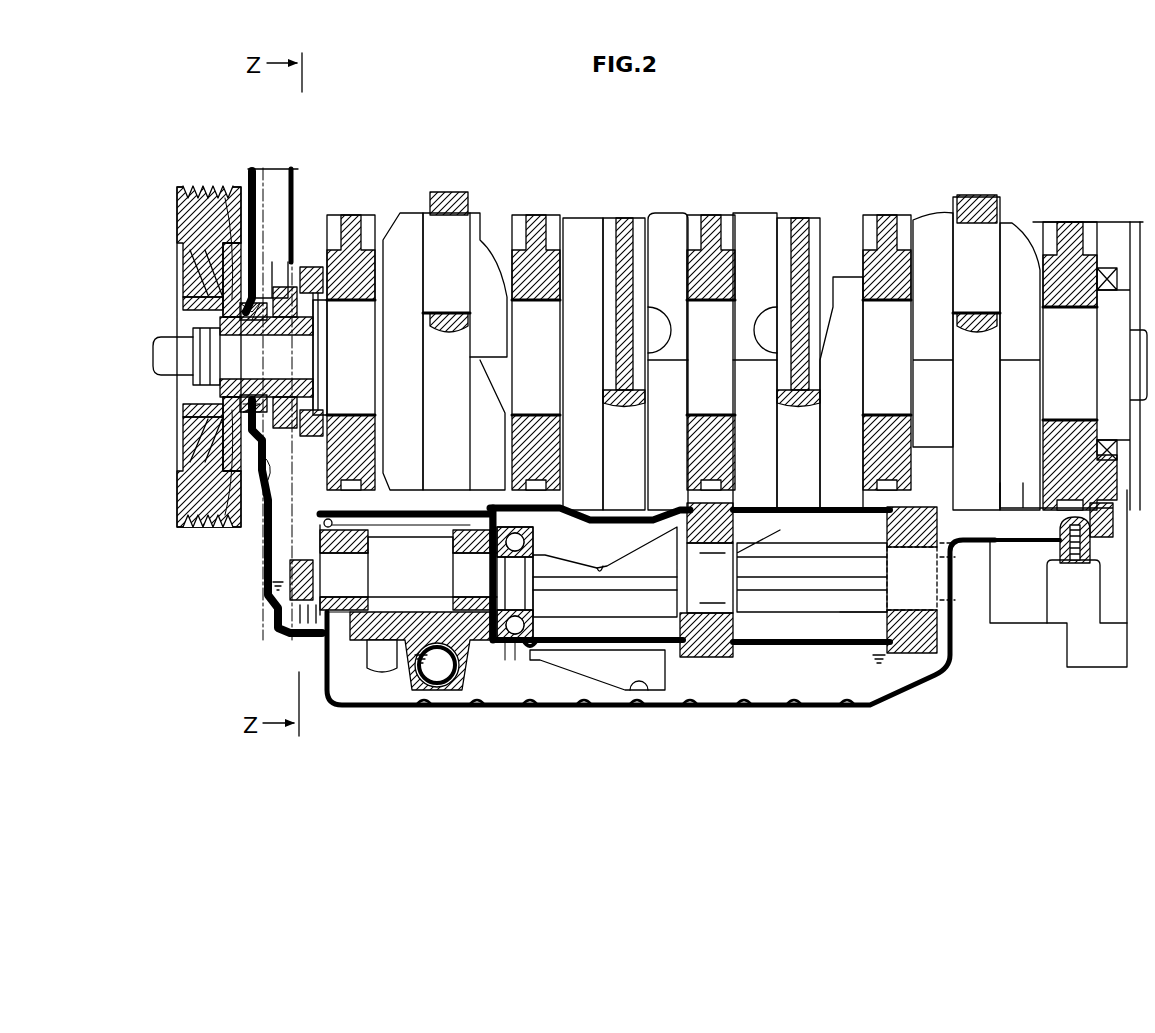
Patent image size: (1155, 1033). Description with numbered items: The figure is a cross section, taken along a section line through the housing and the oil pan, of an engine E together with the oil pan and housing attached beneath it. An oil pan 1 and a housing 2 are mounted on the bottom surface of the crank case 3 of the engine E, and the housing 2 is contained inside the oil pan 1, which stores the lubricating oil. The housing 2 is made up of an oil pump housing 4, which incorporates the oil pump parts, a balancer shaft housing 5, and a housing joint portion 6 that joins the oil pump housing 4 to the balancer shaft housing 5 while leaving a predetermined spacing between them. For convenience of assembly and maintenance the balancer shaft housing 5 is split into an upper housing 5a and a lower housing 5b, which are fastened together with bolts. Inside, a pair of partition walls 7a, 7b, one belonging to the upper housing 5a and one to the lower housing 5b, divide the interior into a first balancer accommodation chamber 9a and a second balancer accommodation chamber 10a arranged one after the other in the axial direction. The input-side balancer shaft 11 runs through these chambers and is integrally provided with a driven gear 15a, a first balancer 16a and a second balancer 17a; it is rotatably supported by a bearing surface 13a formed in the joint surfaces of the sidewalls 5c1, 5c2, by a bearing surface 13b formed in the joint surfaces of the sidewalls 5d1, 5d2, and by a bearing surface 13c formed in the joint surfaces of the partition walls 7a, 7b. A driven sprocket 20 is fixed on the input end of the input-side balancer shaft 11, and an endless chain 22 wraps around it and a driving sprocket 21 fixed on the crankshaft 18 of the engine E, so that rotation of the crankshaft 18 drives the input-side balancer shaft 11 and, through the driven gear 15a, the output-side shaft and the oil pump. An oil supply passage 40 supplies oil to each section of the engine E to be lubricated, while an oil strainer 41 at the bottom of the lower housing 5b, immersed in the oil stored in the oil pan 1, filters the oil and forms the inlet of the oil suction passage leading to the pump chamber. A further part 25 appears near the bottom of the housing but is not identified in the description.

The oil pan 1 is at (945, 690).
The housing 2 is at (940, 665).
The crank case 3 is at (245, 477).
The oil pump housing 4 is at (438, 510).
The balancer shaft housing 5 is at (1080, 683).
The upper housing 5a is at (947, 527).
The lower housing 5b is at (957, 643).
The sidewall 5c1 is at (480, 510).
The sidewall 5c2 is at (470, 690).
The sidewall 5d1 is at (925, 505).
The sidewall 5d2 is at (907, 647).
The housing joint portion 6 is at (449, 690).
The partition wall 7a is at (730, 485).
The partition wall 7b is at (710, 640).
The first balancer accommodation chamber 9a is at (625, 625).
The second balancer accommodation chamber 10a is at (870, 627).
The input-side balancer shaft 11 is at (473, 567).
The bearing surface 13a is at (470, 617).
The bearing surface 13b is at (907, 607).
The bearing surface 13c is at (735, 640).
The driven gear 15a is at (513, 660).
The first balancer 16a is at (567, 600).
The second balancer 17a is at (817, 610).
The crankshaft 18 is at (300, 345).
The driven sprocket 20 is at (295, 600).
The driving sprocket 21 is at (265, 270).
The endless chain 22 is at (300, 498).
The oil pipe 25 is at (432, 603).
The oil supply passage 40 is at (350, 520).
The oil strainer 41 is at (643, 693).
The engine E is at (757, 178).